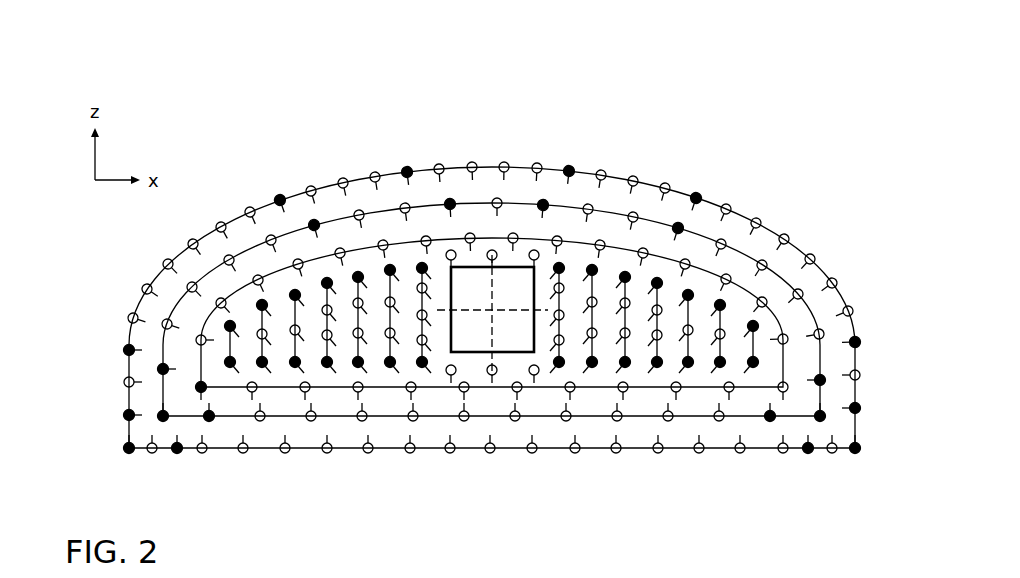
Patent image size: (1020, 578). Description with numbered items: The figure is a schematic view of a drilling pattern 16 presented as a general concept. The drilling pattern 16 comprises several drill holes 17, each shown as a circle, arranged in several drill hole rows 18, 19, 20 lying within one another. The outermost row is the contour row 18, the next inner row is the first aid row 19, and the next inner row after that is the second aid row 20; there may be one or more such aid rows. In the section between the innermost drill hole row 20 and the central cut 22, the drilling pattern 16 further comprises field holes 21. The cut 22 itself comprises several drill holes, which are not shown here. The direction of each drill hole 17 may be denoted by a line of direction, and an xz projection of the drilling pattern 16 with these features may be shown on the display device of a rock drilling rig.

The drilling pattern 16 is at (678, 117).
The drill hole 17 is at (278, 198).
The contour row 18 is at (693, 193).
The first aid row 19 is at (738, 245).
The second aid row 20 is at (751, 287).
The field holes 21 is at (756, 343).
The cut 22 is at (477, 357).